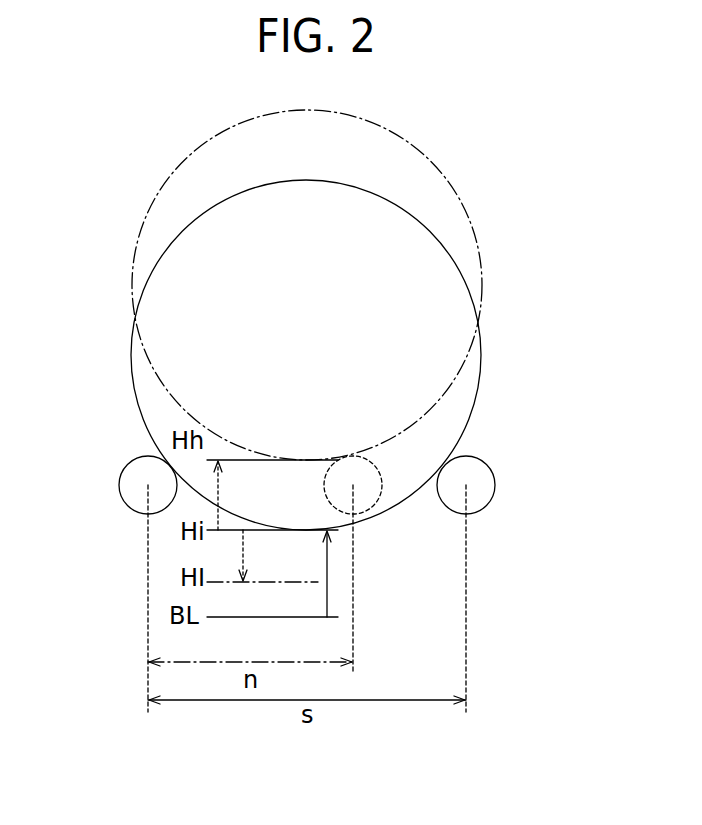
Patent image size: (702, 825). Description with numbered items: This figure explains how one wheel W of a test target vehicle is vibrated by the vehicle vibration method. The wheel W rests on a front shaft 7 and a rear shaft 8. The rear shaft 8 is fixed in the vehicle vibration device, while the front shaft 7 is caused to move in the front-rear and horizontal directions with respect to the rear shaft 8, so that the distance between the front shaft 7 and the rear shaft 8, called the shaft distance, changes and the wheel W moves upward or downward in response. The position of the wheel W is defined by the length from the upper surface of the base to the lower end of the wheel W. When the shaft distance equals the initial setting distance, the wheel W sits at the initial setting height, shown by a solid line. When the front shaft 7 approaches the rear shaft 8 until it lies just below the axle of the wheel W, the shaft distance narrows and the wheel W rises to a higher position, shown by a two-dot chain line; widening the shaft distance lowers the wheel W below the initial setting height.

The front shaft 7 is at (377, 463).
The rear shaft 8 is at (121, 466).
The wheel W is at (467, 215).